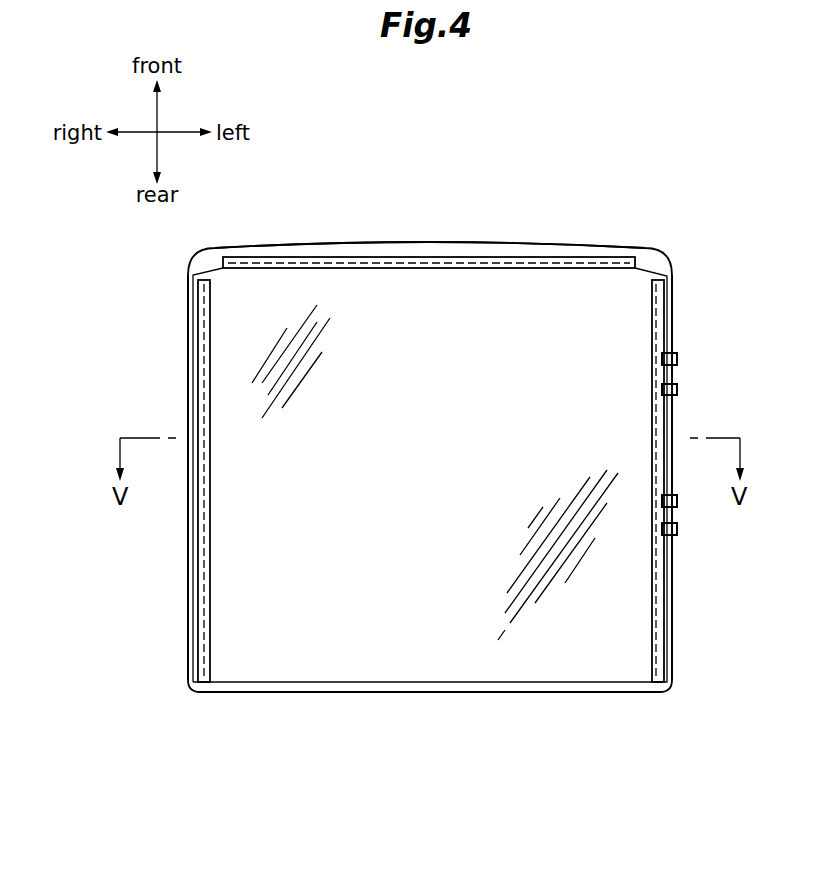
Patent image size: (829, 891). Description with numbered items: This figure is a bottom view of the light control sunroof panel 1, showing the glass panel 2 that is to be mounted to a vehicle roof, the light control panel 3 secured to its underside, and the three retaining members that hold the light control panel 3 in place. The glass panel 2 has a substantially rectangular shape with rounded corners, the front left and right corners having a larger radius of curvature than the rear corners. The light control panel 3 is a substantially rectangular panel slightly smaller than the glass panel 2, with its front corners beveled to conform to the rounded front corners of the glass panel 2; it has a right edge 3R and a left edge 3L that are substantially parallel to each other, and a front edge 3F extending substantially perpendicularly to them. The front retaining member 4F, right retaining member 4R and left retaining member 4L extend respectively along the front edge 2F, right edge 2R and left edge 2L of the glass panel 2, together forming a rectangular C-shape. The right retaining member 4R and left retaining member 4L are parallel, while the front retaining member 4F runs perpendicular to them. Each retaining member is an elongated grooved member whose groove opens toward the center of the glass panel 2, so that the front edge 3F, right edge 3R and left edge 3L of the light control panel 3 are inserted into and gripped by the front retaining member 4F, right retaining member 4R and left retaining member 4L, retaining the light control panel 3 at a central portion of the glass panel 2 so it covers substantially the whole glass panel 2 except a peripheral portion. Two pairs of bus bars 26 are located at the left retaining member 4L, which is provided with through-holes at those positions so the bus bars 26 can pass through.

The light control sunroof panel 1 is at (637, 183).
The glass panel 2 is at (488, 247).
The front edge of the glass panel 2F is at (413, 242).
The left edge of the glass panel 2L is at (674, 322).
The right edge of the glass panel 2R is at (189, 393).
The light control panel 3 is at (460, 667).
The front edge of the light control panel 3F is at (313, 257).
The left edge of the light control panel 3L is at (656, 572).
The right edge of the light control panel 3R is at (205, 542).
The front retaining member 4F is at (370, 262).
The left retaining member 4L is at (667, 627).
The right retaining member 4R is at (198, 612).
The bus bars 26 is at (678, 388).